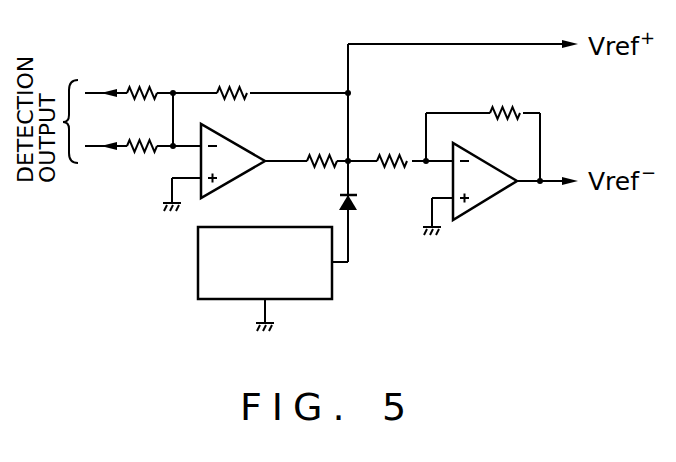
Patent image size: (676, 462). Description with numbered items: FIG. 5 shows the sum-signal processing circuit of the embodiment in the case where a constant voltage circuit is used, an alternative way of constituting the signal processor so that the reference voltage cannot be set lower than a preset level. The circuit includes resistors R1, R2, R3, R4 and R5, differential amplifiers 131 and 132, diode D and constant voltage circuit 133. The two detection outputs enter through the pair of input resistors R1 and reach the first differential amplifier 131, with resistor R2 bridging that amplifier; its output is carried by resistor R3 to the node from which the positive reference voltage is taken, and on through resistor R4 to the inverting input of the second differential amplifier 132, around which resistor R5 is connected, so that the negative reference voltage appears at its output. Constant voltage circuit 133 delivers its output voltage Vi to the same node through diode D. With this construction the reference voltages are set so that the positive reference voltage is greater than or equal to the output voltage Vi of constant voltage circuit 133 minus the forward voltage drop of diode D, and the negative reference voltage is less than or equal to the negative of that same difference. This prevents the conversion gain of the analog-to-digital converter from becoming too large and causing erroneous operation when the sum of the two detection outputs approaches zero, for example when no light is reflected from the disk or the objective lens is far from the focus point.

The resistor R1 is at (138, 90).
The resistor R2 is at (228, 90).
The resistor R3 is at (316, 158).
The resistor R4 is at (390, 158).
The resistor R5 is at (501, 108).
The differential amplifier 131 is at (250, 149).
The differential amplifier 132 is at (495, 193).
The constant voltage circuit 133 is at (299, 227).
The diode D is at (360, 201).
The output voltage of constant voltage circuit Vi is at (349, 267).